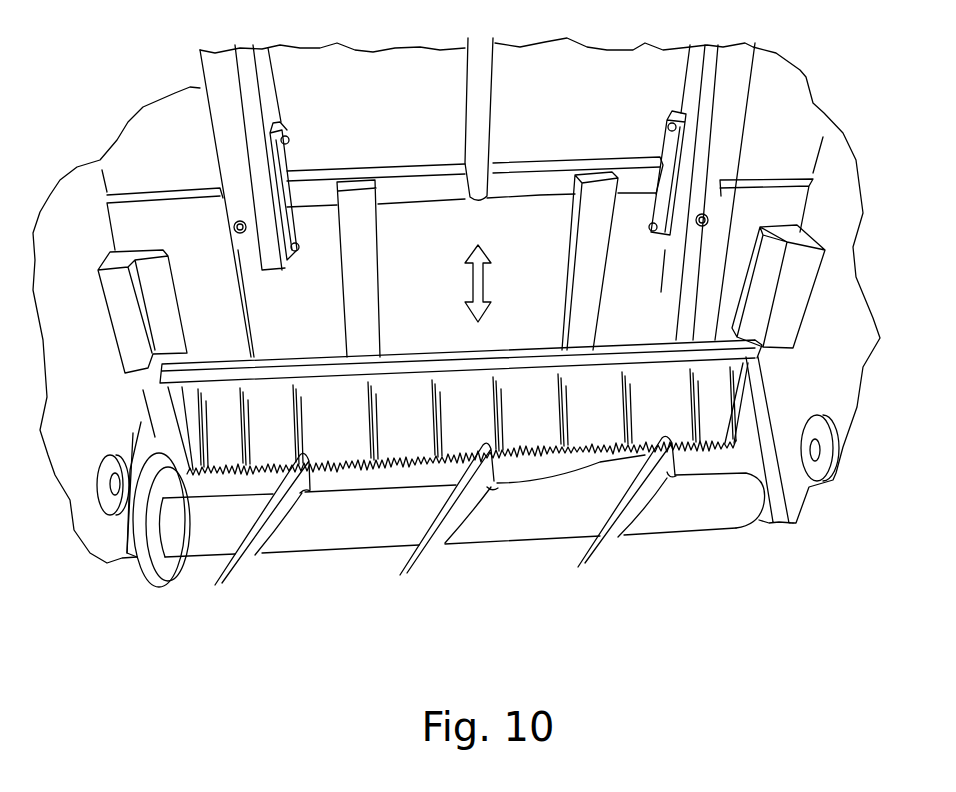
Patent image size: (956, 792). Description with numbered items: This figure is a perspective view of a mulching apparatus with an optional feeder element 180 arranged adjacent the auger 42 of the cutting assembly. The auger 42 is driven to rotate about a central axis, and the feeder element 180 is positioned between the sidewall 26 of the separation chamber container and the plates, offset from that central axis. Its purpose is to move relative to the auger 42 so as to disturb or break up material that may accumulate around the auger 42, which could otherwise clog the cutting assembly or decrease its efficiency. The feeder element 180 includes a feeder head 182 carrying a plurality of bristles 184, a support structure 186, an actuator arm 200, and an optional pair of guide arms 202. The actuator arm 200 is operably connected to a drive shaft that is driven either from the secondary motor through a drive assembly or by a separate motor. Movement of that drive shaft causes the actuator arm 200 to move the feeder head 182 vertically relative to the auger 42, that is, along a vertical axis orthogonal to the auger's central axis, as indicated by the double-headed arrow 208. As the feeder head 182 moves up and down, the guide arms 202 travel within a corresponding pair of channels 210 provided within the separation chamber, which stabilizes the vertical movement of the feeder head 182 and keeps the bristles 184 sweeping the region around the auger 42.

The sidewall 26 is at (93, 525).
The auger 42 is at (346, 530).
The feeder element 180 is at (150, 386).
The feeder head 182 is at (749, 353).
The bristles 184 is at (220, 434).
The support structure 186 is at (358, 322).
The actuator arm 200 is at (483, 123).
The guide arms 202 is at (284, 162).
The arrow 208 is at (478, 283).
The channels 210 is at (253, 107).